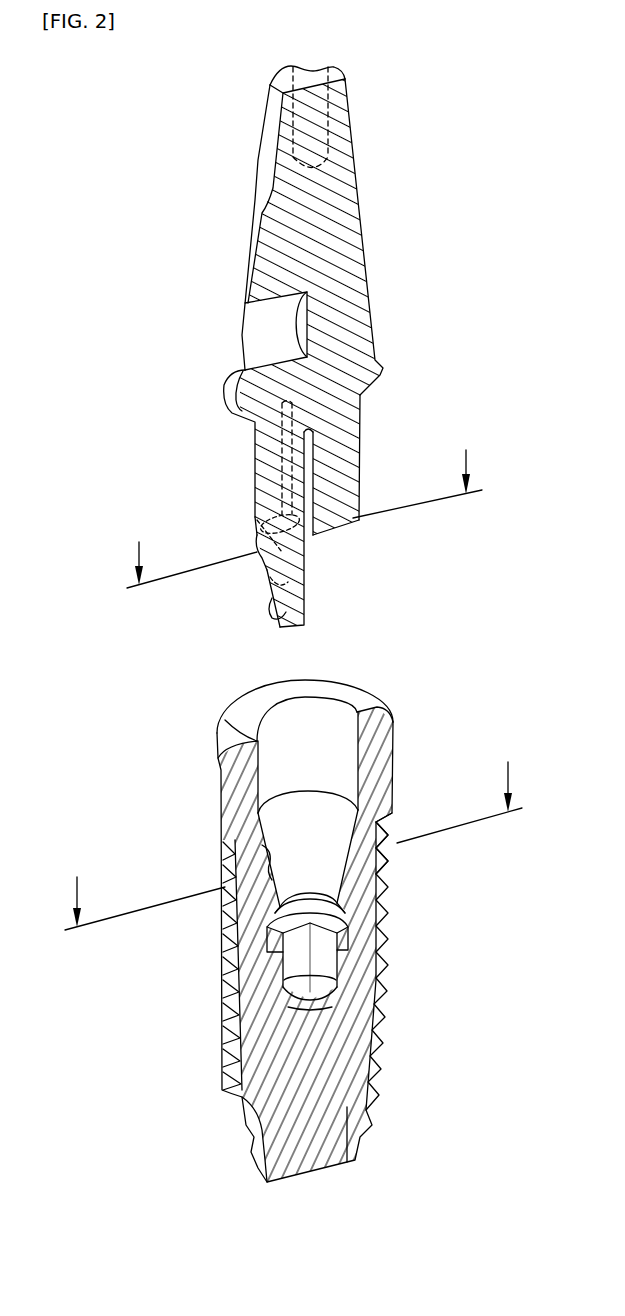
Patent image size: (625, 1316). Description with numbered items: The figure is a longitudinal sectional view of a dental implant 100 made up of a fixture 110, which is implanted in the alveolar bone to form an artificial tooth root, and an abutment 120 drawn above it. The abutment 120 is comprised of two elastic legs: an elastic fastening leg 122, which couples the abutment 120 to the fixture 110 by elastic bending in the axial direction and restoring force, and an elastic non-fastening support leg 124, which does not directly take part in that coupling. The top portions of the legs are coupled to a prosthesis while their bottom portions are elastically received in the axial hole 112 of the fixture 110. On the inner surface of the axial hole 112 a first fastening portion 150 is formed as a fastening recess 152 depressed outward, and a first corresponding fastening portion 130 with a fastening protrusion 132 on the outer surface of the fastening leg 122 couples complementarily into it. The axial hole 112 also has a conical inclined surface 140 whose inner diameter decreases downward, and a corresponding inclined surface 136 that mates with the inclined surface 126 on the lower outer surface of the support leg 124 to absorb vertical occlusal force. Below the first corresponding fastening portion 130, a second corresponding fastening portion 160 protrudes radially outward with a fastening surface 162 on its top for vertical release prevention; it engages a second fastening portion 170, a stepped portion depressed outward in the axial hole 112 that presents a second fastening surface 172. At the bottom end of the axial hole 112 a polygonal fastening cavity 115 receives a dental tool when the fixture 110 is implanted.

The dental implant 100 is at (126, 176).
The fixture 110 is at (223, 790).
The axial hole 112 is at (331, 752).
The fastening cavity 115 is at (322, 955).
The abutment 120 is at (255, 453).
The elastic fastening leg 122 is at (303, 602).
The elastic non-fastening support leg 124 is at (353, 455).
The inclined surface 126 is at (355, 517).
The first corresponding fastening portion 130 is at (262, 553).
The fastening protrusion 132 is at (279, 548).
The corresponding inclined surface 136 is at (260, 859).
The inclined surface 140 is at (339, 858).
The first fastening portion 150 is at (268, 882).
The fastening recess 152 is at (267, 862).
The second corresponding fastening portion 160 is at (270, 627).
The fastening surface 162 is at (272, 602).
The second fastening portion 170 is at (345, 915).
The second fastening surface 172 is at (307, 913).